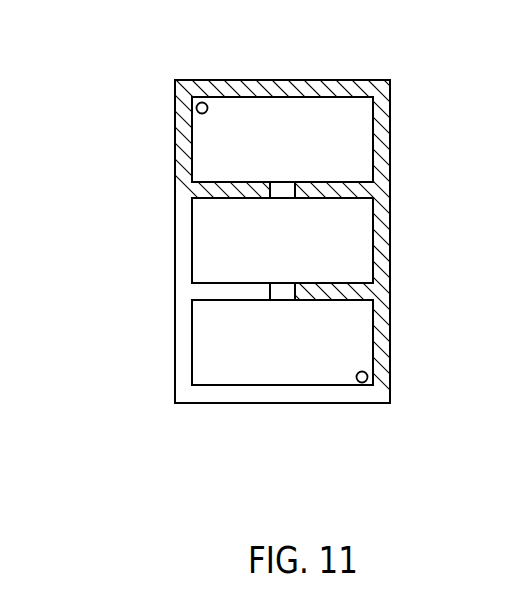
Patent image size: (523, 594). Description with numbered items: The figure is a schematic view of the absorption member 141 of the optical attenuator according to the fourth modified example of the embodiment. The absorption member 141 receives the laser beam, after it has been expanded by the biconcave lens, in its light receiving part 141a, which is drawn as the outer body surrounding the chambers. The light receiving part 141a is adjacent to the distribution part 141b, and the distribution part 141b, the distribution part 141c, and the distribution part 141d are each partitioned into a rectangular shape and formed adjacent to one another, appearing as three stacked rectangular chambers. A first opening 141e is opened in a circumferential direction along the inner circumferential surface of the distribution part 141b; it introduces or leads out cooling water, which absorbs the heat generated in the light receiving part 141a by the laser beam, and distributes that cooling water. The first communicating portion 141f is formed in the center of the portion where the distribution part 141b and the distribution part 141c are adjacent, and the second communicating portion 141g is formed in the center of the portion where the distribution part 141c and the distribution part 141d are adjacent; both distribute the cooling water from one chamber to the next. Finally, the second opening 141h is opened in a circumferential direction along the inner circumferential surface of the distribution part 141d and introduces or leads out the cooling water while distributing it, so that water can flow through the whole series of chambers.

The absorption member 141 is at (60, 50).
The light receiving part 141a is at (243, 79).
The distribution part 141b is at (207, 163).
The distribution part 141c is at (207, 263).
The distribution part 141d is at (207, 365).
The first opening 141e is at (207, 110).
The first communicating portion 141f is at (283, 194).
The second communicating portion 141g is at (293, 302).
The second opening 141h is at (368, 378).